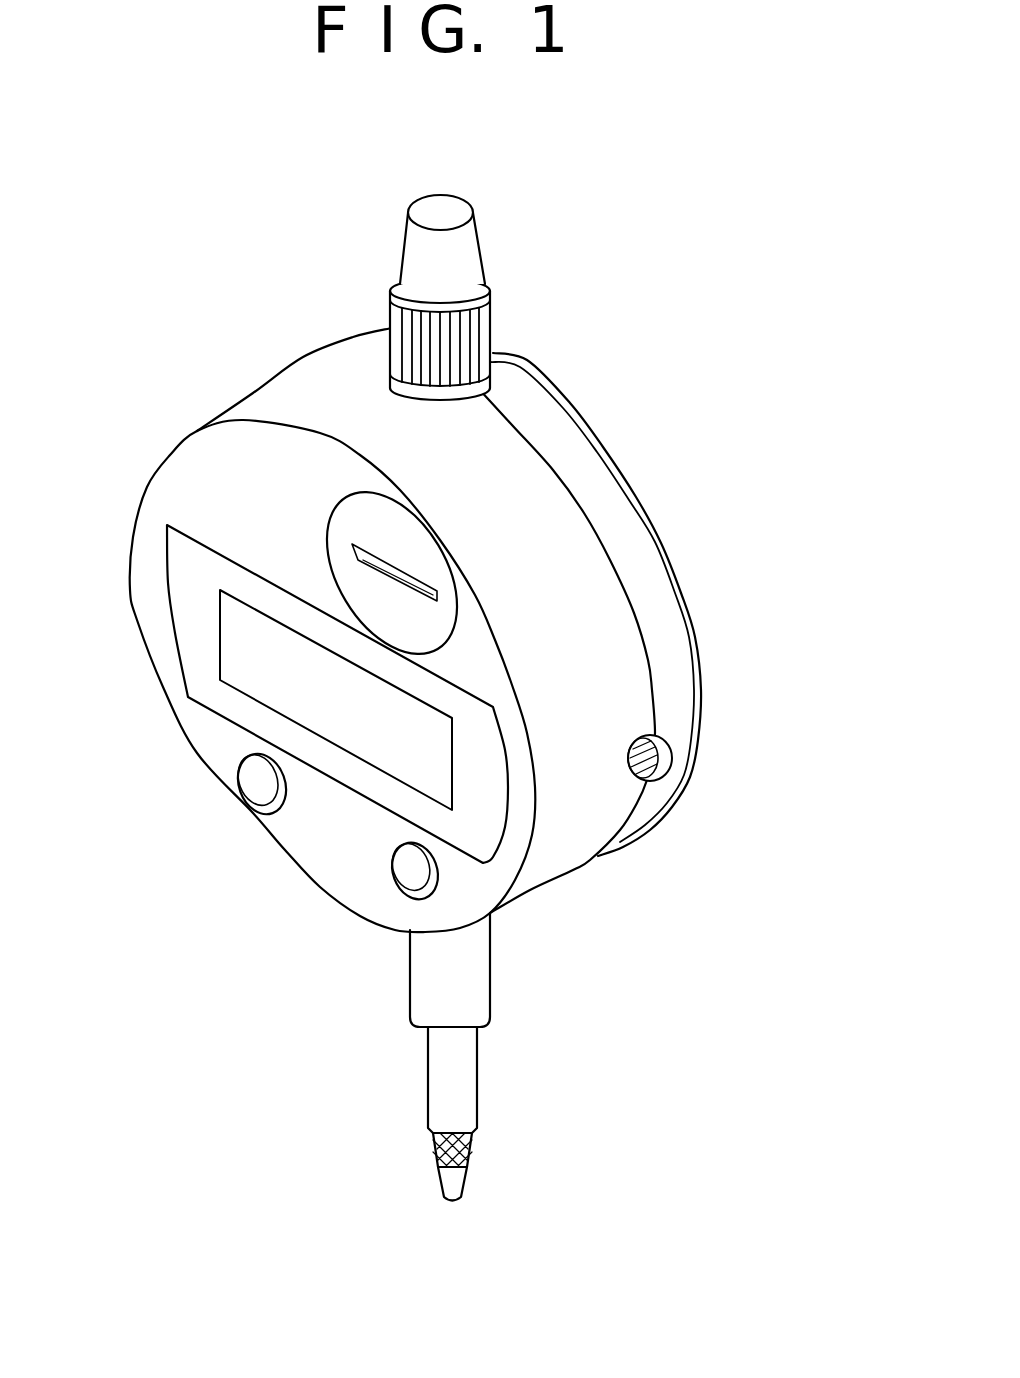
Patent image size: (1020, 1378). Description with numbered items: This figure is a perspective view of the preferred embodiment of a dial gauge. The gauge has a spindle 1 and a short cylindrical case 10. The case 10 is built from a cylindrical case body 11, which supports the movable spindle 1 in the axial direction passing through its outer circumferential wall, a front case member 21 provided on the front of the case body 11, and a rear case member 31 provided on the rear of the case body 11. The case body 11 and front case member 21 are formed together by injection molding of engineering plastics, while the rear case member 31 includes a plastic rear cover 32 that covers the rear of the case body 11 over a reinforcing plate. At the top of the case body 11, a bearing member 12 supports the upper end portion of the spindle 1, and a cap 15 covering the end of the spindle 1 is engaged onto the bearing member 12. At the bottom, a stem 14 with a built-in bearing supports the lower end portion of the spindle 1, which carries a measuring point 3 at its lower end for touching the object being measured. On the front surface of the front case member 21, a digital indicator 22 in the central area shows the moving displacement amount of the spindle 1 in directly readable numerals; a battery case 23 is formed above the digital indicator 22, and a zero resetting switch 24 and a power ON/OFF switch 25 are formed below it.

The spindle 1 is at (473, 1077).
The measuring point 3 is at (475, 1185).
The case 10 is at (508, 630).
The case body 11 is at (650, 585).
The bearing member 12 is at (480, 392).
The stem 14 is at (470, 988).
The cap 15 is at (403, 248).
The front case member 21 is at (487, 668).
The digital indicator 22 is at (220, 642).
The battery case 23 is at (347, 512).
The zero resetting switch 24 is at (253, 792).
The power ON/OFF switch 25 is at (410, 883).
The rear case member 31 is at (805, 665).
The rear cover 32 is at (637, 492).